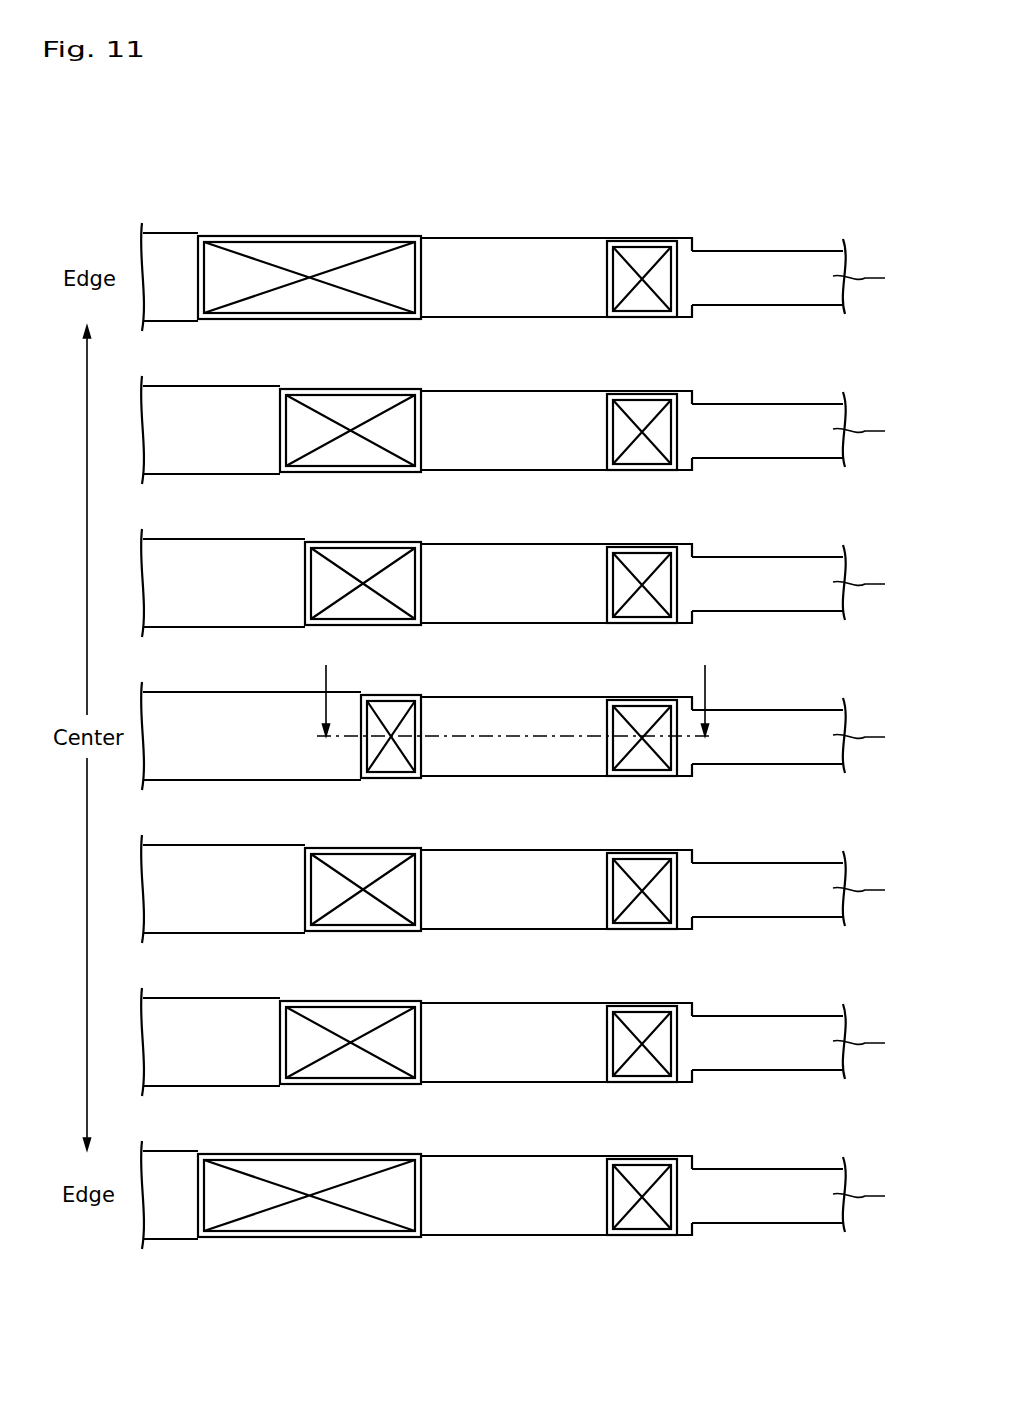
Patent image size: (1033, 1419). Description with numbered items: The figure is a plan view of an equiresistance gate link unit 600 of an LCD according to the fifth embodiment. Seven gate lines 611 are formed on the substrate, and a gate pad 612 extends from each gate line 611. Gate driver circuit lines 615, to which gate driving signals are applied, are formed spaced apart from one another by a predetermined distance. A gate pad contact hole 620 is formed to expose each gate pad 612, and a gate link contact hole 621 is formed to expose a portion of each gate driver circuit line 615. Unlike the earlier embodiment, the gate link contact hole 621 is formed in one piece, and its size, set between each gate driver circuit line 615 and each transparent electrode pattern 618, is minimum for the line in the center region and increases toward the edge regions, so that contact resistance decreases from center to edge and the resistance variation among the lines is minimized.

The equiresistance gate link unit 600 is at (549, 152).
The gate line 611 is at (723, 258).
The gate pad 612 is at (640, 241).
The gate driver circuit line 615 is at (170, 232).
The transparent electrode pattern 618 is at (497, 238).
The gate pad contact hole 620 is at (620, 273).
The gate link contact hole 621 is at (293, 245).